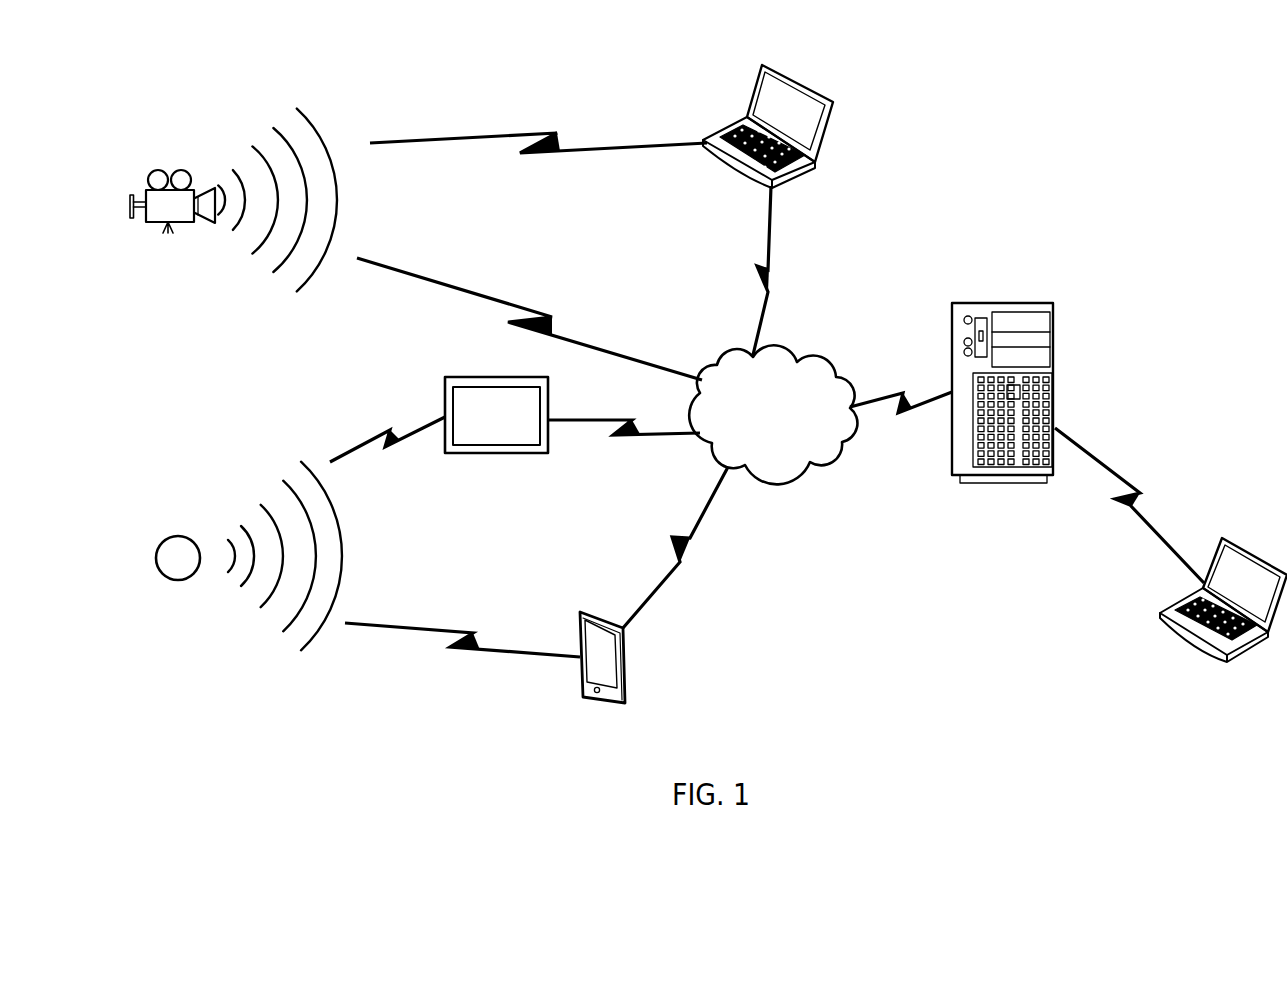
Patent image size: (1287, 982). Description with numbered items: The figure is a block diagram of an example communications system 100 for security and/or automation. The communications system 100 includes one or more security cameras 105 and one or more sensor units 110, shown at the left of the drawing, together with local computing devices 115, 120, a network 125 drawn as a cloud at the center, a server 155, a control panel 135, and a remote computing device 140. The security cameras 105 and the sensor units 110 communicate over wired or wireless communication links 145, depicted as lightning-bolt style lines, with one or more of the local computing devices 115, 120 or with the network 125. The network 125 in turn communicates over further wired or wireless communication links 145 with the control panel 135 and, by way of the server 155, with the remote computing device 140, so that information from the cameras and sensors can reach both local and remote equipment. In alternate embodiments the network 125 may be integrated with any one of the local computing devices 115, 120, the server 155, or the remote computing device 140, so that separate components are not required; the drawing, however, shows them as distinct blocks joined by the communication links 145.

The communications system 100 is at (180, 755).
The security camera 105 is at (170, 240).
The sensor unit 110 is at (179, 581).
The local computing device 115 is at (742, 183).
The local computing device 120 is at (594, 694).
The network 125 is at (796, 360).
The control panel 135 is at (500, 453).
The remote computing device 140 is at (1193, 651).
The communication link 145 is at (478, 135).
The server 155 is at (1022, 303).